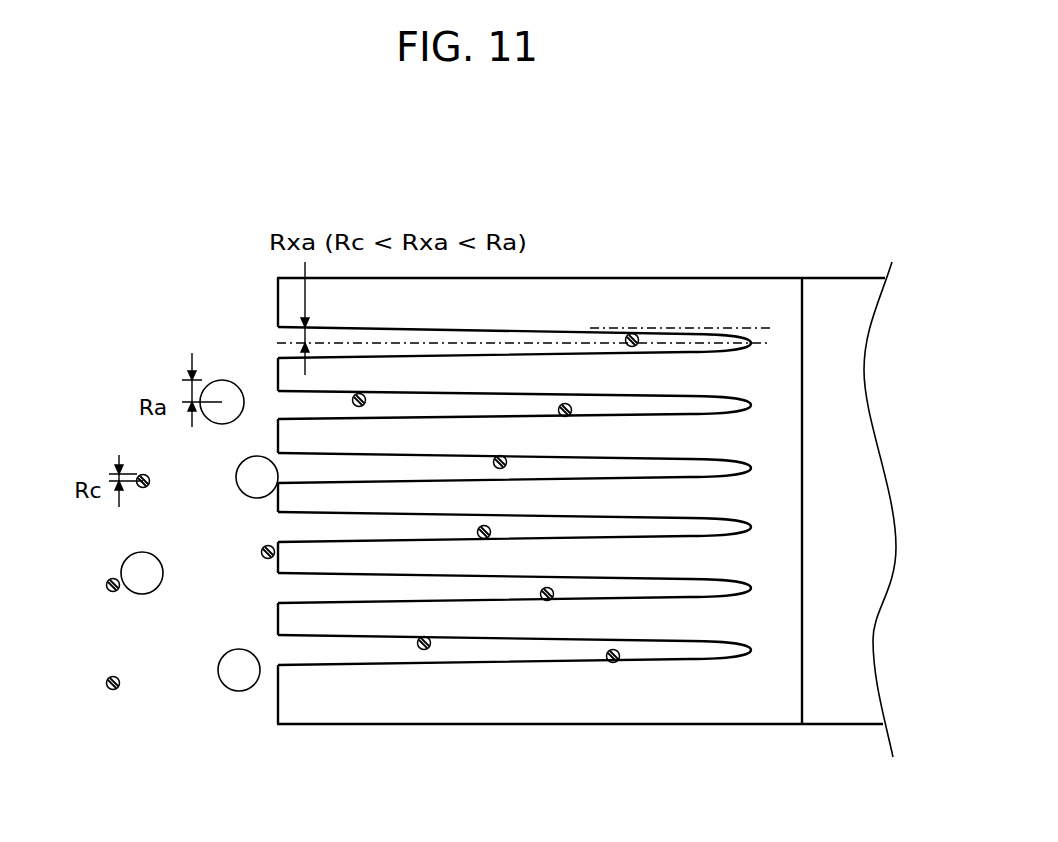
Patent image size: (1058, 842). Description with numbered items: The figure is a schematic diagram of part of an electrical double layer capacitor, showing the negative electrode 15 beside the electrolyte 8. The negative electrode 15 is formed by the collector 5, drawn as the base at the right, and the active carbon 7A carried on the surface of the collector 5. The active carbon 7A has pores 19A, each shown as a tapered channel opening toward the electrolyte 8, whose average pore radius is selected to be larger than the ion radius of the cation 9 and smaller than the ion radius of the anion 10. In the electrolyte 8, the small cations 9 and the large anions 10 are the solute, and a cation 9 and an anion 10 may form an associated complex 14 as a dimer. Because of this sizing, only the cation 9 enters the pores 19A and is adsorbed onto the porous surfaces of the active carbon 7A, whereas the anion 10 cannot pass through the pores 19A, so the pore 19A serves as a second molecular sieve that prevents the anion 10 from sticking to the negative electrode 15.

The negative electrode 15 is at (937, 220).
The electrolyte 8 is at (280, 220).
The active carbon 7A is at (673, 310).
The active carbon pore 19A is at (722, 470).
The collector 5 is at (840, 705).
The anion 10 is at (237, 680).
The associated complex 14 is at (132, 605).
The cation 9 is at (615, 662).